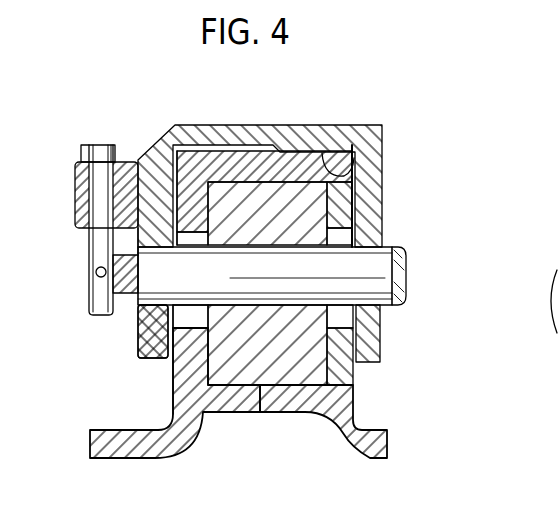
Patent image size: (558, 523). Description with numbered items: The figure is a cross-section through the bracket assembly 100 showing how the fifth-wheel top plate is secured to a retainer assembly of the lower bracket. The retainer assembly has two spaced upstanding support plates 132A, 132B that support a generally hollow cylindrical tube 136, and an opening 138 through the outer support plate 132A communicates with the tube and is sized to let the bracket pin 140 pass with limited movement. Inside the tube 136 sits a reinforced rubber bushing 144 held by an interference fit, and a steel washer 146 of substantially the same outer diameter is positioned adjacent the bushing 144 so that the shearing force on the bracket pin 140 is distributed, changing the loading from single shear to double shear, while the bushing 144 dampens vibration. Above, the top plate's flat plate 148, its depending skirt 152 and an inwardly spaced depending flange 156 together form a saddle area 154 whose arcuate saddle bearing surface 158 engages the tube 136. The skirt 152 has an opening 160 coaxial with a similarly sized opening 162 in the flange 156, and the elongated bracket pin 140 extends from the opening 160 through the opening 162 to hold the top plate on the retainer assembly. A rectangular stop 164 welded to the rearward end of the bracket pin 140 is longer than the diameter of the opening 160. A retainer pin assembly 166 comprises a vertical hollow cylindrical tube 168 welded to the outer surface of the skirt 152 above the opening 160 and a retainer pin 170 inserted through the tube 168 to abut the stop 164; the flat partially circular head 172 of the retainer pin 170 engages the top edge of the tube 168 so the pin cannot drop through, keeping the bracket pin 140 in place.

The bracket assembly 100 is at (478, 154).
The support plate 132A is at (173, 395).
The support plate 132B is at (352, 418).
The hollow cylindrical tube 136 is at (283, 162).
The opening 138 is at (185, 318).
The bracket pin 140 is at (399, 244).
The rubber bushing 144 is at (307, 321).
The steel washer 146 is at (350, 370).
The flat plate 148 is at (327, 137).
The skirt 152 is at (137, 345).
The saddle area 154 is at (355, 165).
The flange 156 is at (383, 343).
The saddle bearing surface 158 is at (356, 170).
The opening 160 is at (138, 325).
The opening 162 is at (390, 310).
The rectangular stop 164 is at (138, 307).
The retainer pin assembly 166 is at (102, 146).
The hollow cylindrical tube 168 is at (76, 206).
The retainer pin 170 is at (88, 258).
The head 172 is at (78, 155).